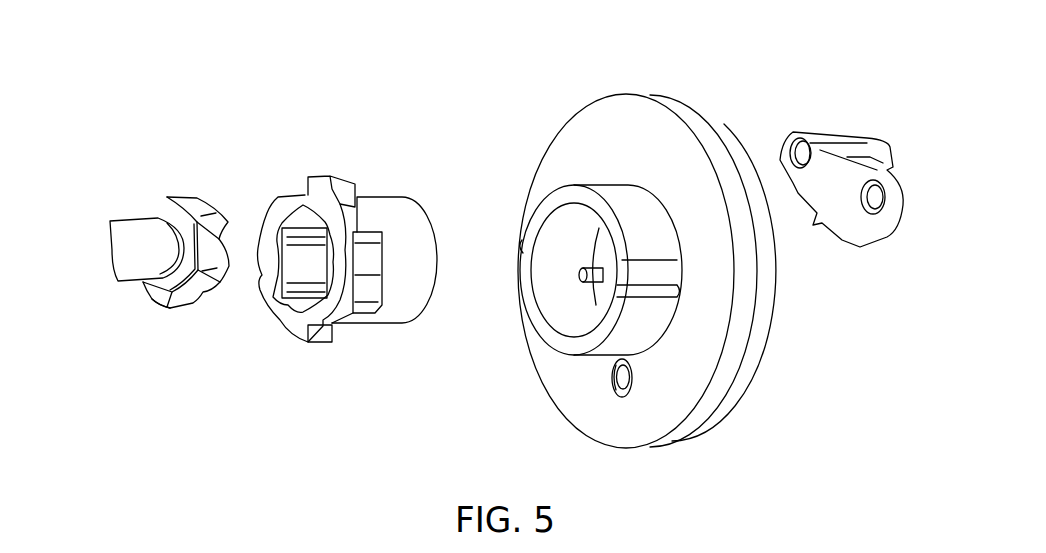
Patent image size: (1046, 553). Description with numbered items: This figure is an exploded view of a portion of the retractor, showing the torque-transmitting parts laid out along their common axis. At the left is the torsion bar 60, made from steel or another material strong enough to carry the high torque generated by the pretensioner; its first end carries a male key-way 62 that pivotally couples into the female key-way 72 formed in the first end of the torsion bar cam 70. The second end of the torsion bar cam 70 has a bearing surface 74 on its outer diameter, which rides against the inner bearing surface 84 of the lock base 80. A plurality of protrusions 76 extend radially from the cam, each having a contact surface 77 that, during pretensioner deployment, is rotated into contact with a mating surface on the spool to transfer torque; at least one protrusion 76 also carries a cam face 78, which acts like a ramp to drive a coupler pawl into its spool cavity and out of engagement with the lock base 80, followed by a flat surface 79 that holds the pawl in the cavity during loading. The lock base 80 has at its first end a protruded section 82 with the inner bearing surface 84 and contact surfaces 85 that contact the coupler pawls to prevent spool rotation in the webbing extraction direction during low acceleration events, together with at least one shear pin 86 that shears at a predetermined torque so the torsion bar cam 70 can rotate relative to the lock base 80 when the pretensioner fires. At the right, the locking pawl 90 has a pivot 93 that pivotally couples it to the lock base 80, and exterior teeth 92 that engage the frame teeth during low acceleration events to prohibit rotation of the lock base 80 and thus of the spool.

The torsion bar 60 is at (149, 181).
The male key-way 62 is at (190, 305).
The torsion bar cam 70 is at (353, 158).
The female key-way 72 is at (290, 272).
The bearing surface 74 is at (394, 322).
The protrusions 76 is at (276, 214).
The contact surface 77 is at (305, 184).
The cam face 78 is at (366, 285).
The flat surface 79 is at (266, 280).
The lock base 80 is at (652, 77).
The protruded section 82 is at (528, 235).
The inner bearing surface 84 is at (558, 312).
The contact surfaces 85 is at (523, 249).
The shear pin 86 is at (581, 275).
The locking pawl 90 is at (833, 107).
The teeth 92 is at (822, 227).
The pivot 93 is at (873, 202).